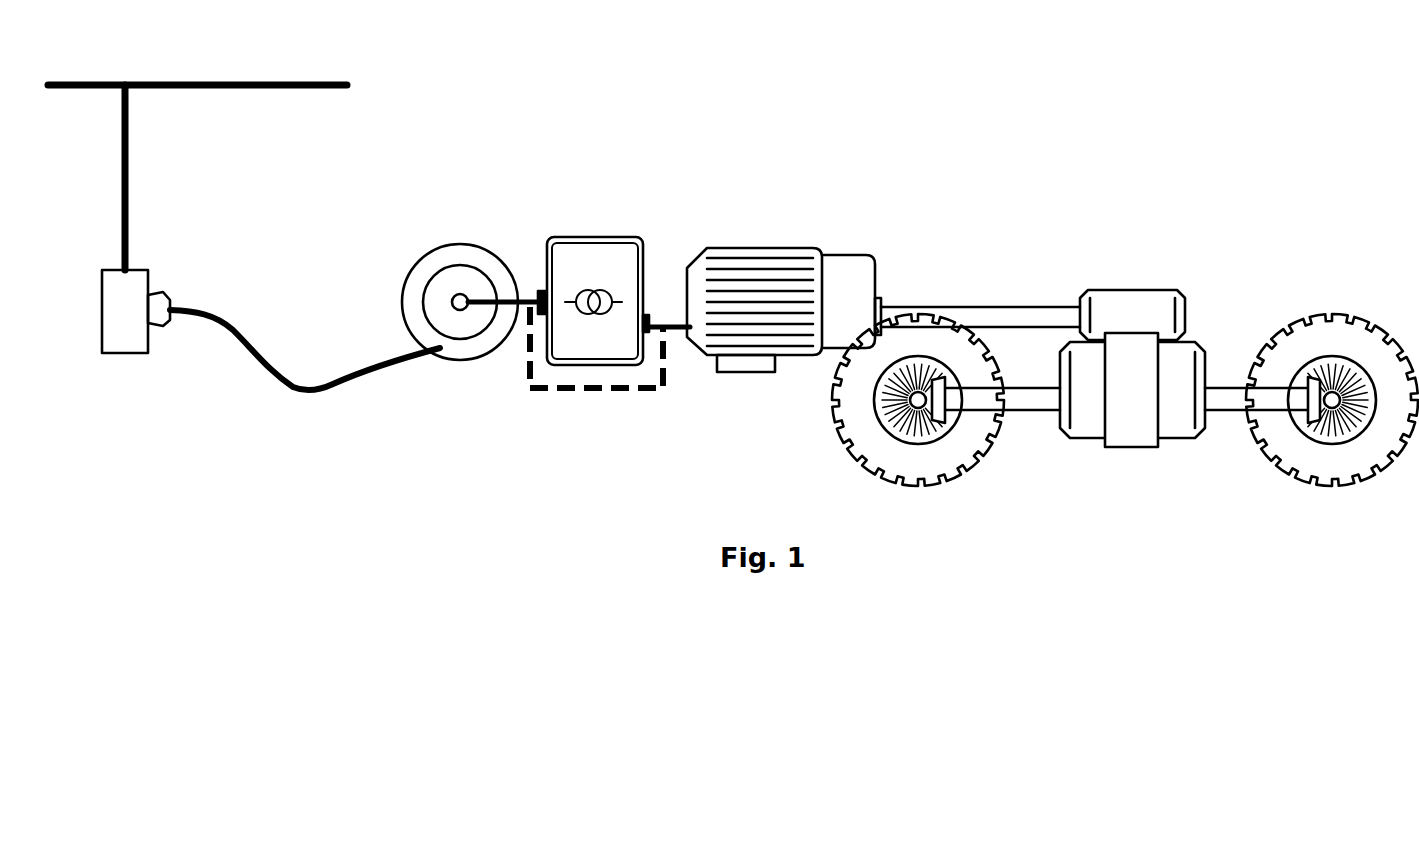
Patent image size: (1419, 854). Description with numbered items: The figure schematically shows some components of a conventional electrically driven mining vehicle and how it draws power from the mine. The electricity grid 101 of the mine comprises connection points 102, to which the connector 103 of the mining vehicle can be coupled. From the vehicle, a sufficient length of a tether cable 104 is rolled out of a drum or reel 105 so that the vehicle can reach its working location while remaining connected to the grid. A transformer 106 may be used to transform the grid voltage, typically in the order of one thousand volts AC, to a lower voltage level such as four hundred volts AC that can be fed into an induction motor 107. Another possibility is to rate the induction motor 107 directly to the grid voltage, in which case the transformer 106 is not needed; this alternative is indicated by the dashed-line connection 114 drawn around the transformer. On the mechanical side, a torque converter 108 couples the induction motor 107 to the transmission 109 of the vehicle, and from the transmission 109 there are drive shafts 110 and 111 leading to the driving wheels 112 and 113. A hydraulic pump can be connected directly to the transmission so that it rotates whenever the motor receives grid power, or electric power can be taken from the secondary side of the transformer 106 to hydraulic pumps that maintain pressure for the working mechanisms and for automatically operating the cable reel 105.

The electricity grid 101 is at (257, 81).
The connection point 102 is at (143, 267).
The connector 103 is at (160, 327).
The tether cable 104 is at (313, 383).
The reel 105 is at (461, 253).
The transformer 106 is at (608, 237).
The induction motor 107 is at (767, 248).
The torque converter 108 is at (840, 255).
The transmission 109 is at (1195, 340).
The drive shaft 110 is at (1031, 411).
The drive shaft 111 is at (1232, 413).
The driving wheel 112 is at (940, 480).
The driving wheel 113 is at (1310, 478).
The dashed-line connection 114 is at (614, 392).